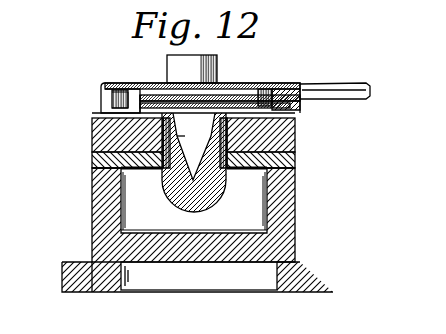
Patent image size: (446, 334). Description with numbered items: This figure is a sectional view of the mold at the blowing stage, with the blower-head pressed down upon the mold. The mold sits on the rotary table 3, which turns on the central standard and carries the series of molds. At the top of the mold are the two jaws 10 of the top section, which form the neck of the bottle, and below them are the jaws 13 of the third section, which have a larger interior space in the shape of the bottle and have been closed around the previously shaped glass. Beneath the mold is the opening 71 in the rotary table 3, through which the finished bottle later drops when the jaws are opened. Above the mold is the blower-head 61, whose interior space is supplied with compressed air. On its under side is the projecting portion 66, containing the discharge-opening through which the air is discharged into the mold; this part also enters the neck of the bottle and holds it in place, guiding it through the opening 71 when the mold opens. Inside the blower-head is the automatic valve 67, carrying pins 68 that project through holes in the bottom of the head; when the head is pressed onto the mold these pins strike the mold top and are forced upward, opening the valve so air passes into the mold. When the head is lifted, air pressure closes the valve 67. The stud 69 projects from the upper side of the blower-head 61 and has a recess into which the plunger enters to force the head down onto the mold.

The rotary table 3 is at (68, 291).
The jaws of the top section of the mold 10 is at (92, 142).
The jaws of the third section of the mold 13 is at (92, 205).
The blower-head 61 is at (260, 84).
The projecting portion 66 is at (195, 157).
The automatic valve 67 is at (124, 98).
The pins 68 is at (112, 100).
The stud 69 is at (256, 72).
The opening 71 is at (199, 276).